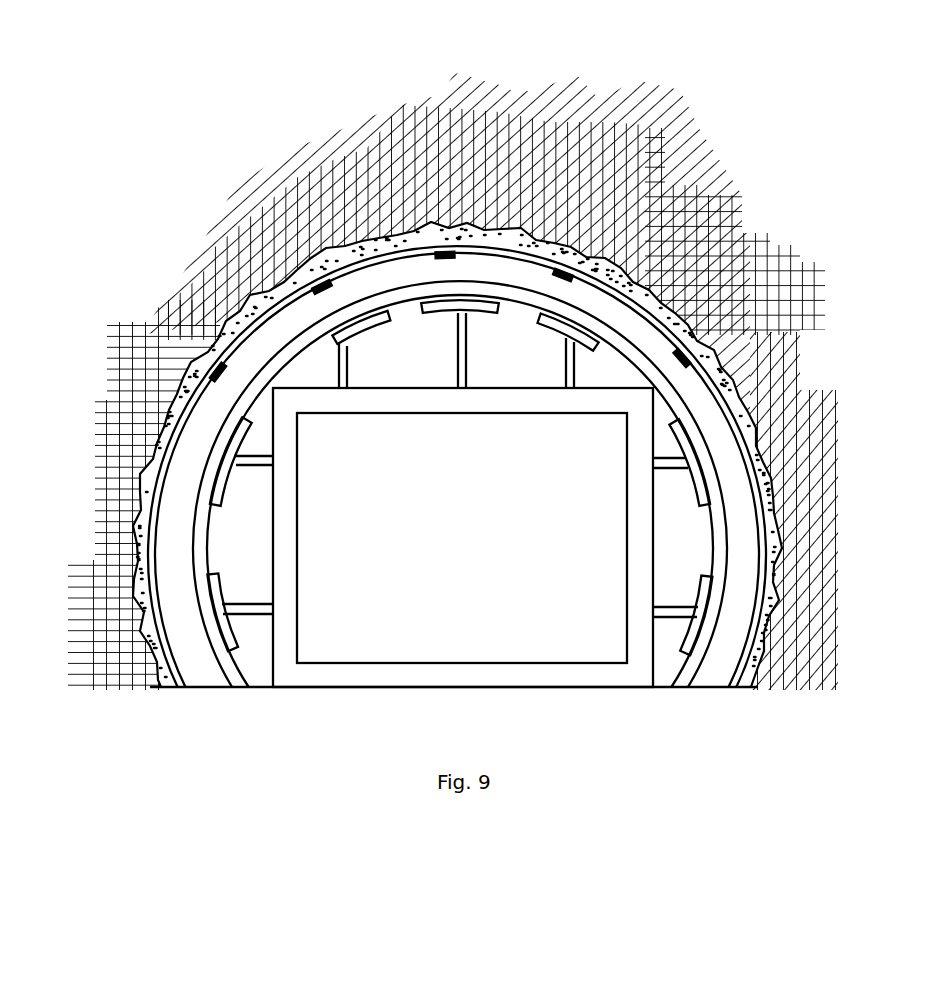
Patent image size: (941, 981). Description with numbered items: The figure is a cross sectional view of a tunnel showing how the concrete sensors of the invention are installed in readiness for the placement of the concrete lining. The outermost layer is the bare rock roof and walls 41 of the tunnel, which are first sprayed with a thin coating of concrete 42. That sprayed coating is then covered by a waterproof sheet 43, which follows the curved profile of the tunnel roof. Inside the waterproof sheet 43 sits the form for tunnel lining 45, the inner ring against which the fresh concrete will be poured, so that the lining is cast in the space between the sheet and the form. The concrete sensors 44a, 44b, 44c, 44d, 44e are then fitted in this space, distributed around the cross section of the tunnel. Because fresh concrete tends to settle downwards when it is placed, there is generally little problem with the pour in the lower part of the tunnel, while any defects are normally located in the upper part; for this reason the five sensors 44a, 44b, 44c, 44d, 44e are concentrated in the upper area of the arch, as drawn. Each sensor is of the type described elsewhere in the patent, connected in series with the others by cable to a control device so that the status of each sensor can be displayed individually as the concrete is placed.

The bare roof and walls 41 is at (687, 240).
The thin coating of concrete 42 is at (680, 300).
The waterproof sheet 43 is at (758, 548).
The concrete sensor 44a is at (225, 380).
The concrete sensor 44b is at (323, 293).
The concrete sensor 44c is at (443, 259).
The concrete sensor 44d is at (560, 281).
The concrete sensor 44e is at (676, 366).
The form for tunnel lining 45 is at (715, 620).